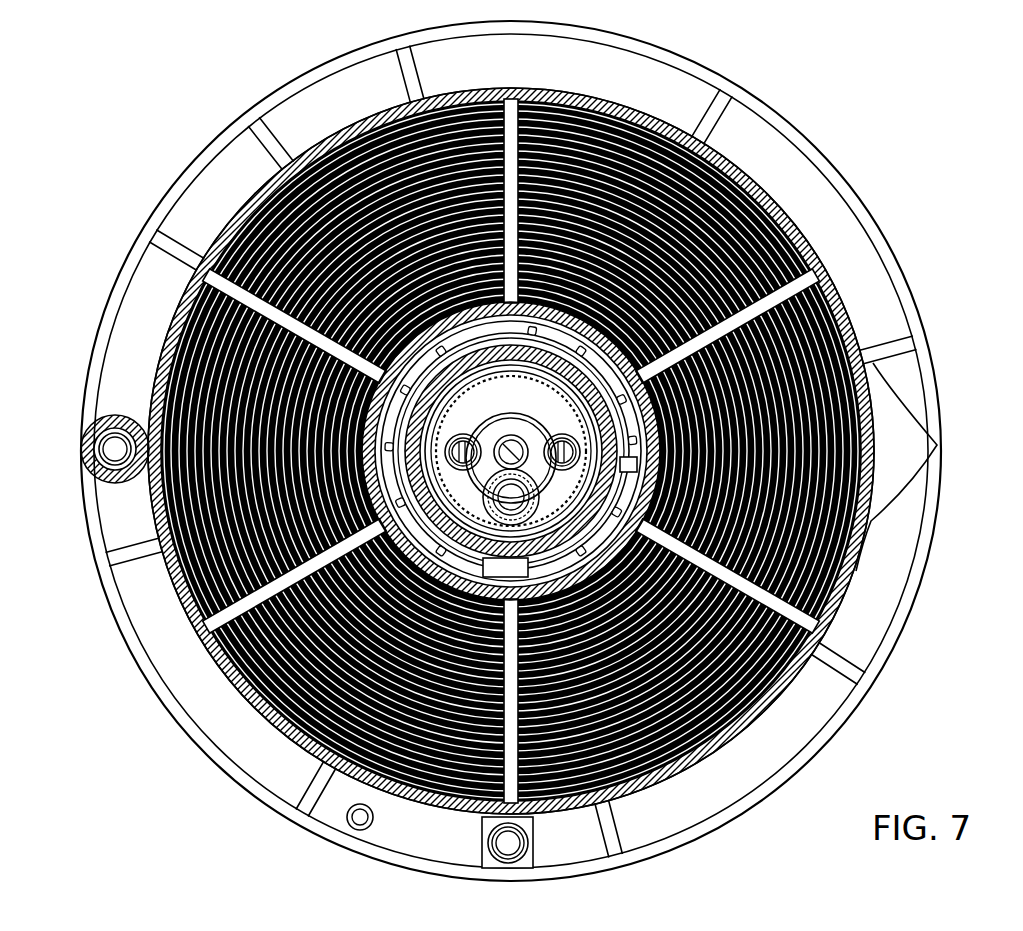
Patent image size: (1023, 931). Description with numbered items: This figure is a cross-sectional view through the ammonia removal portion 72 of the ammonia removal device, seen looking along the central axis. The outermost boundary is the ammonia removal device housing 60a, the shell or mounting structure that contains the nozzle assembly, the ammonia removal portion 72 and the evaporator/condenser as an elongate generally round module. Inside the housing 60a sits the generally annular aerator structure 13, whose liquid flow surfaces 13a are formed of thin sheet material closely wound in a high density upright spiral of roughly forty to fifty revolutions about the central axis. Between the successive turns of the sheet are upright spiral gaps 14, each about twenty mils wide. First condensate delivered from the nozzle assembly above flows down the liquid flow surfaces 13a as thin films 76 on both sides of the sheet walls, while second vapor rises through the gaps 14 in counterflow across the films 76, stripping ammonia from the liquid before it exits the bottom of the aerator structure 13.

The ammonia removal portion 72 is at (934, 218).
The aerator structure 13 is at (511, 441).
The liquid flow surfaces 13a is at (511, 451).
The gaps 14 is at (532, 451).
The films 76 is at (579, 451).
The ammonia removal device housing 60a is at (406, 142).